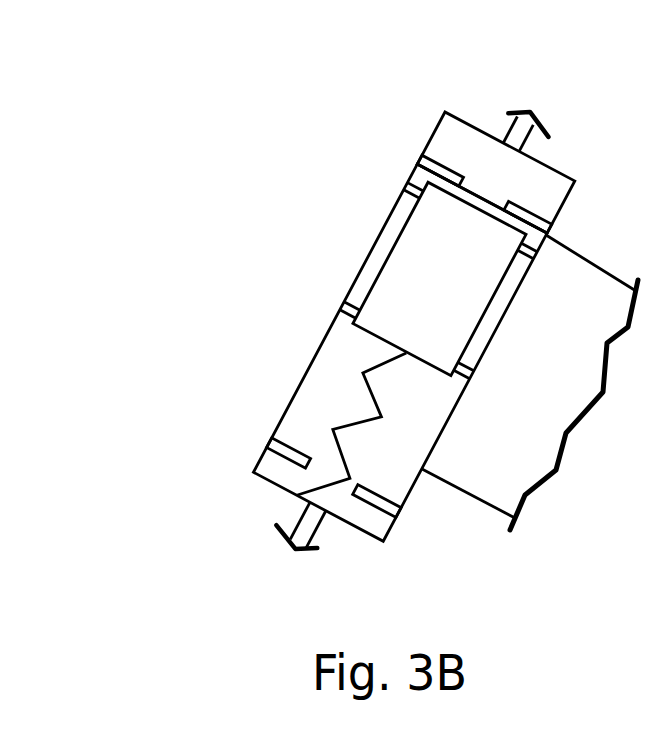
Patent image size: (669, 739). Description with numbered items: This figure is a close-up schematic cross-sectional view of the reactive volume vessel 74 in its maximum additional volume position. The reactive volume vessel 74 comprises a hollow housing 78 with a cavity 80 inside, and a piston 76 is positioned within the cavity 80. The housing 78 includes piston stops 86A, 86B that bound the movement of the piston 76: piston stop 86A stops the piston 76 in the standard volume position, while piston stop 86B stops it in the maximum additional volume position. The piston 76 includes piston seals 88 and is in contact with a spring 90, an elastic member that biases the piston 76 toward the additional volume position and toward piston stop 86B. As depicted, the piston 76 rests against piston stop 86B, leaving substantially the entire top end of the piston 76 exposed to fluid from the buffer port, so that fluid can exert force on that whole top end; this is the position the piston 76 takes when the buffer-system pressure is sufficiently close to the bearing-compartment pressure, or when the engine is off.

The reactive volume vessel 74 is at (262, 247).
The piston 76 is at (455, 289).
The housing 78 is at (297, 383).
The cavity 80 is at (485, 158).
The piston stop 86A is at (267, 442).
The piston stop 86B is at (417, 158).
The piston seals 88 is at (410, 176).
The spring 90 is at (341, 449).